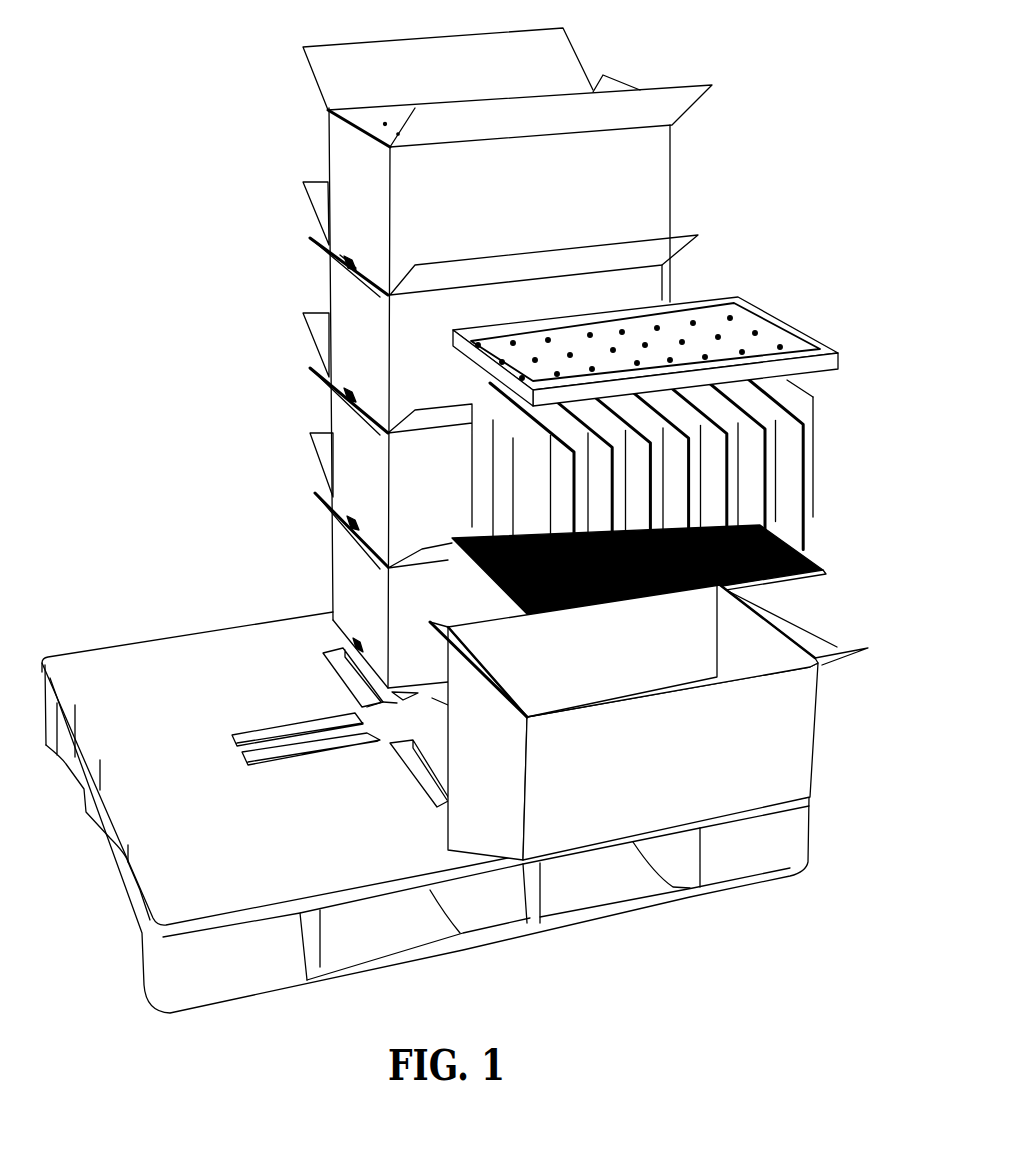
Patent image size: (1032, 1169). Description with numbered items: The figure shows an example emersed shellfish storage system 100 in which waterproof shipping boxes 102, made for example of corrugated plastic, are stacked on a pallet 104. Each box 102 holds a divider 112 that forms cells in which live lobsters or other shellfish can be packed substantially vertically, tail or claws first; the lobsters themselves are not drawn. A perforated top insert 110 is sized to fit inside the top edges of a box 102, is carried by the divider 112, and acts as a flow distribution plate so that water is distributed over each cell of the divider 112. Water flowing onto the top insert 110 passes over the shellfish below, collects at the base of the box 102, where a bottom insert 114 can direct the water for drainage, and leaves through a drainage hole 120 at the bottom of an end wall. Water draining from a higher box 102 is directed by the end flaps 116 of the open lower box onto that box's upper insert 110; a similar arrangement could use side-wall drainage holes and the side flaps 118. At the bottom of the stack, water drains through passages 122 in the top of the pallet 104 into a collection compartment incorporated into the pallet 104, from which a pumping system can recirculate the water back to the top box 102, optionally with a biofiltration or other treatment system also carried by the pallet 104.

The emersed shellfish storage system 100 is at (190, 67).
The waterproof shipping box 102 is at (642, 173).
The pallet 104 is at (460, 776).
The top insert 110 is at (843, 362).
The divider 112 is at (812, 442).
The bottom insert 114 is at (810, 543).
The end flap 116 is at (796, 621).
The side flap 118 is at (685, 232).
The drainage hole 120 is at (360, 253).
The passage 122 is at (357, 688).